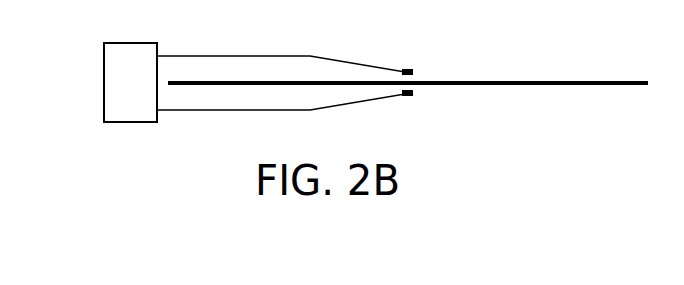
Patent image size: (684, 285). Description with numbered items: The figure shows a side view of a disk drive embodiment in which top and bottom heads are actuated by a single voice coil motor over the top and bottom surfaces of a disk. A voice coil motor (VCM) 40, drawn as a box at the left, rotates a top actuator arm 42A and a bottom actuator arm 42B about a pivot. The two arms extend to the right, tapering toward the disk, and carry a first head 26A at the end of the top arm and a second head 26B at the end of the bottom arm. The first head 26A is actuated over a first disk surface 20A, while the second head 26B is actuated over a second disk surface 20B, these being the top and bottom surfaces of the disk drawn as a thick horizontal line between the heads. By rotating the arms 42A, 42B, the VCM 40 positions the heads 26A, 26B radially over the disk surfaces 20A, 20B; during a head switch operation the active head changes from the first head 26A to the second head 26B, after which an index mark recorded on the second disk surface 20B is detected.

The voice coil motor 40 is at (103, 68).
The top actuator arm 42A is at (204, 55).
The bottom actuator arm 42B is at (204, 111).
The first head 26A is at (409, 69).
The second head 26B is at (409, 101).
The first disk surface 20A is at (474, 81).
The second disk surface 20B is at (474, 85).